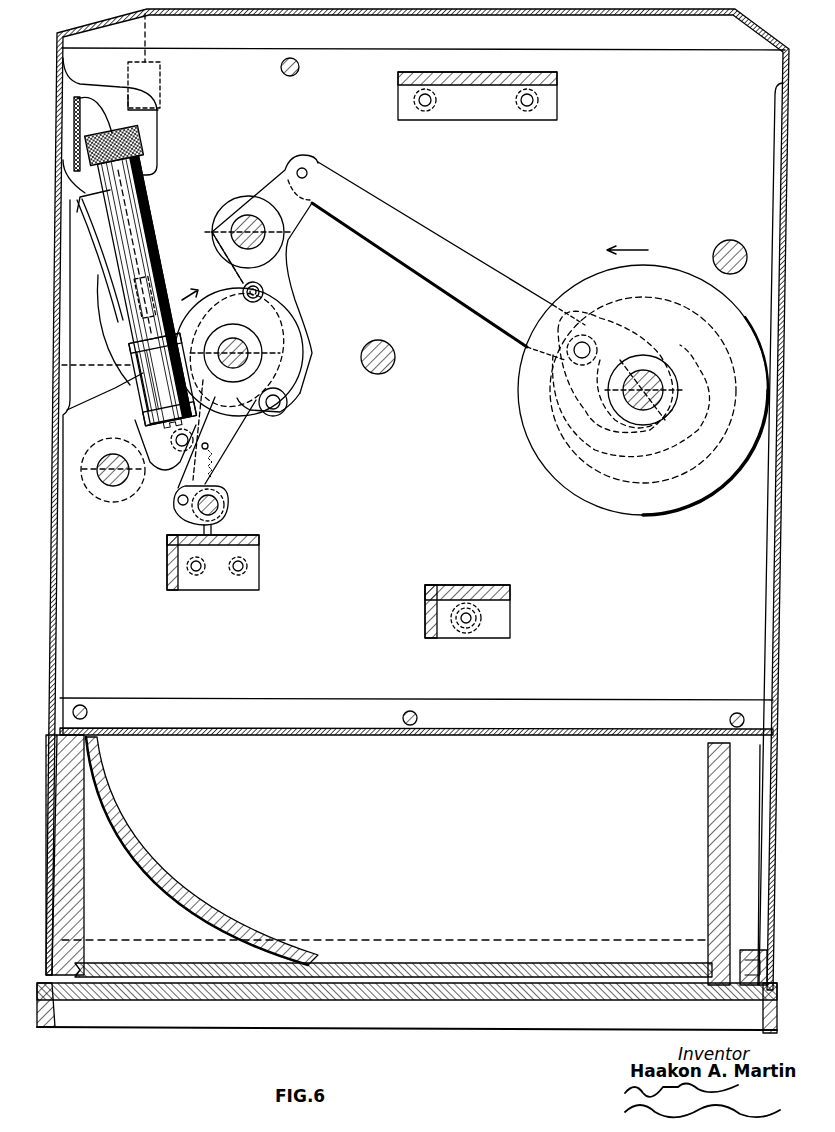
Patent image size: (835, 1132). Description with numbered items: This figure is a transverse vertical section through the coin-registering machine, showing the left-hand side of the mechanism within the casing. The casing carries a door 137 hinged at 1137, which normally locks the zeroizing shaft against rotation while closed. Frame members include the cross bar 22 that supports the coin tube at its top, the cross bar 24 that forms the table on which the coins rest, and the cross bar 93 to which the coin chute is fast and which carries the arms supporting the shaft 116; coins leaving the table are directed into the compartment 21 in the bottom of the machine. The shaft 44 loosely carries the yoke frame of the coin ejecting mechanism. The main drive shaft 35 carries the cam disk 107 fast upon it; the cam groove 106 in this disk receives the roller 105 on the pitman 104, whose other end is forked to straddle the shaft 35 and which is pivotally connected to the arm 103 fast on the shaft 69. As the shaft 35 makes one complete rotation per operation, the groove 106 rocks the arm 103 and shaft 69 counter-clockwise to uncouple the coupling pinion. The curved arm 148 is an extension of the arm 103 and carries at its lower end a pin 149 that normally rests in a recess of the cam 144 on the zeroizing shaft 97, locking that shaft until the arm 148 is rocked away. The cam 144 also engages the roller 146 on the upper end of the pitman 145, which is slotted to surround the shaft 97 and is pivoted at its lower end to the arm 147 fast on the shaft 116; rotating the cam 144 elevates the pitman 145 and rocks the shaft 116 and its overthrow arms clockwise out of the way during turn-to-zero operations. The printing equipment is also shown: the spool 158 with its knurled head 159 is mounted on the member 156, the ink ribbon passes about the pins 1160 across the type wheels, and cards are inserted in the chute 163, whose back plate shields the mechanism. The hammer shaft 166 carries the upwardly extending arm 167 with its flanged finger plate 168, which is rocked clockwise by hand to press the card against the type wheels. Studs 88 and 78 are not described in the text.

The door 137 is at (147, 25).
The compartment 21 is at (286, 752).
The hinge 1137 is at (140, 104).
The flanged finger plate 168 is at (85, 112).
The spool 158 is at (150, 216).
The knurled head 159 is at (140, 143).
The pin 1160 is at (140, 400).
The chute 163 is at (88, 207).
The upwardly extending arm 167 is at (75, 296).
The shaft 166 is at (118, 485).
The member 156 is at (170, 479).
The pitman 145 is at (218, 432).
The arm 147 is at (185, 513).
The shaft 116 is at (225, 503).
The cross bar 93 is at (204, 586).
The cross bar 24 is at (440, 615).
The cross bar 22 is at (548, 82).
The stud 88 is at (300, 69).
The stud 78 is at (386, 346).
The shaft 44 is at (725, 268).
The curved arm 148 is at (292, 305).
The arm 103 is at (262, 185).
The pitman 104 is at (400, 219).
The shaft 69 is at (240, 221).
The roller 146 is at (262, 286).
The shaft 97 is at (232, 346).
The cam 144 is at (250, 410).
The pin 149 is at (280, 402).
The cam disk 107 is at (640, 507).
The main drive shaft 35 is at (660, 400).
The roller 105 is at (575, 356).
The cam groove 106 is at (553, 430).